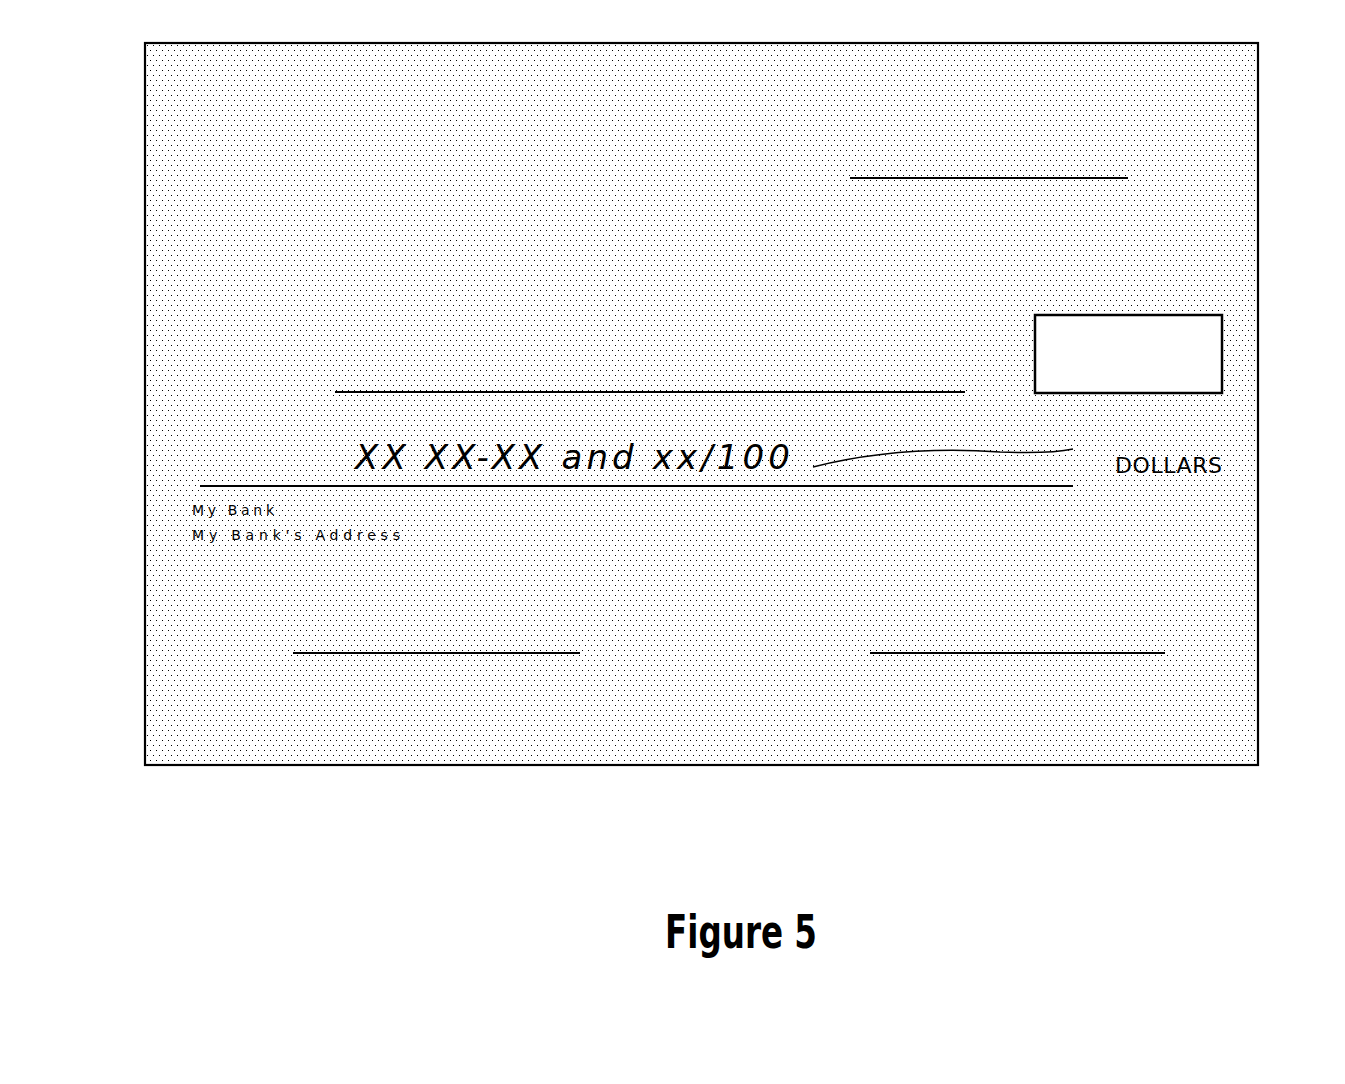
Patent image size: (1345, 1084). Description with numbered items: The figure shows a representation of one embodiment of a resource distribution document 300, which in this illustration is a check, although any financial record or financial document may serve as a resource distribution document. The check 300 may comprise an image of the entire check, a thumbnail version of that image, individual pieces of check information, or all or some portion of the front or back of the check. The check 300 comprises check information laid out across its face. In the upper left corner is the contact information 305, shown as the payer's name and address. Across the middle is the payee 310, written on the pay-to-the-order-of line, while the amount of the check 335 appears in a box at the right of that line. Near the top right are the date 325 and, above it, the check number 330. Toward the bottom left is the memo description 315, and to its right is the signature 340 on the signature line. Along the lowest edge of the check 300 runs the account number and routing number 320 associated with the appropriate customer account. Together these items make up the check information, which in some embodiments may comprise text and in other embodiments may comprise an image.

The resource distribution document 300 is at (1143, 725).
The contact information 305 is at (190, 78).
The payee 310 is at (190, 319).
The memo description 315 is at (190, 594).
The account number and routing number 320 is at (791, 782).
The date 325 is at (778, 115).
The check number 330 is at (1220, 90).
The amount of the check 335 is at (1222, 300).
The signature 340 is at (1165, 579).